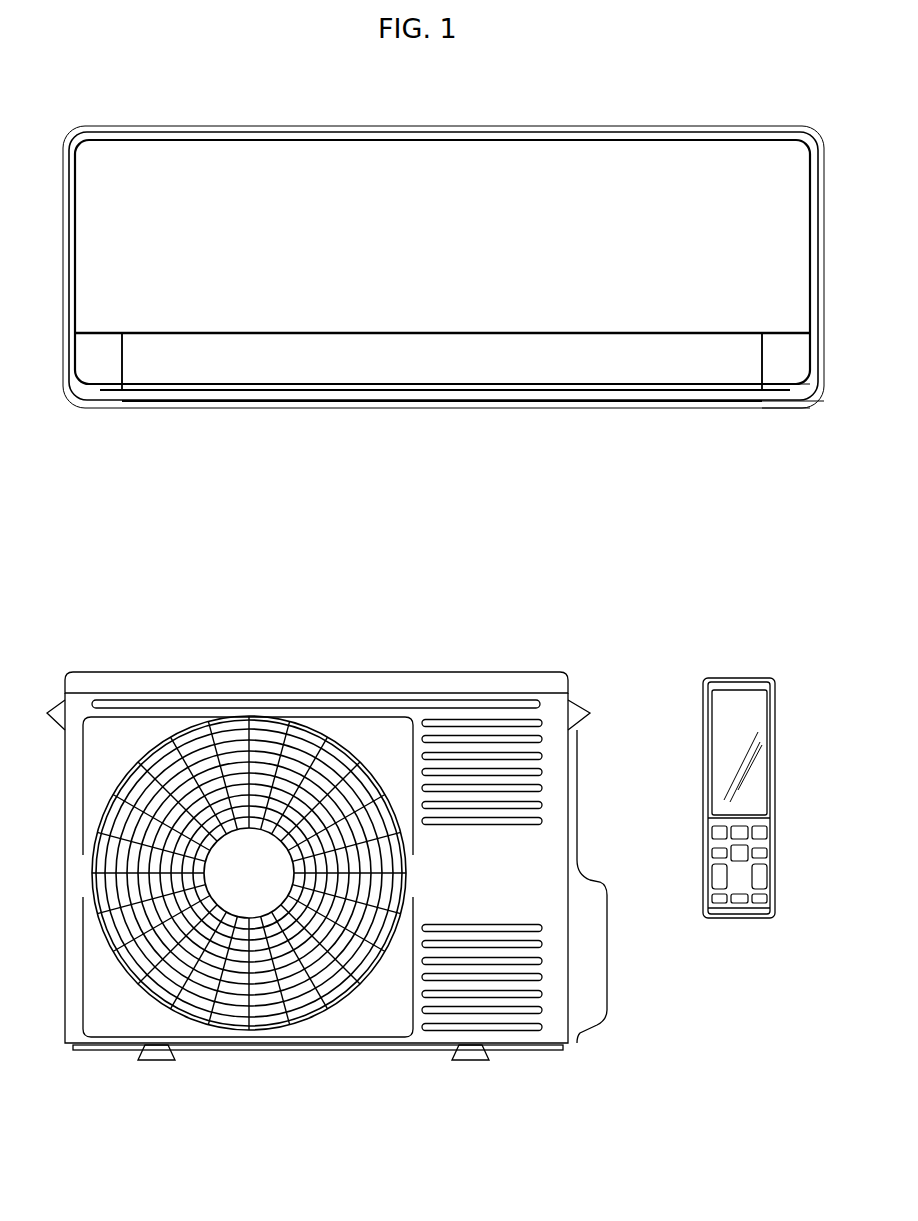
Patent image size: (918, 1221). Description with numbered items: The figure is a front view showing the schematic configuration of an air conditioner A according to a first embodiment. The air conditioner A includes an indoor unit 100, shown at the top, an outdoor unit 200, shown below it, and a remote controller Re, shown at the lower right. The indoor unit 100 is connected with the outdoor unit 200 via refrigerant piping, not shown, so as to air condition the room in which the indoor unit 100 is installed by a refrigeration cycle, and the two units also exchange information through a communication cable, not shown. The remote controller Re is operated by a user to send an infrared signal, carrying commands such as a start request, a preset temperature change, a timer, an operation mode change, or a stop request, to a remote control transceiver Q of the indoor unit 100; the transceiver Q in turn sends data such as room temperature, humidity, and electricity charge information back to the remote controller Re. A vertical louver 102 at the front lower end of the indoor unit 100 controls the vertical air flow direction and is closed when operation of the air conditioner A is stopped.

The indoor unit 100 is at (443, 328).
The vertical louver 102 is at (185, 367).
The remote control transceiver Q is at (783, 405).
The outdoor unit 200 is at (558, 666).
The air conditioner A is at (700, 500).
The remote controller Re is at (733, 915).